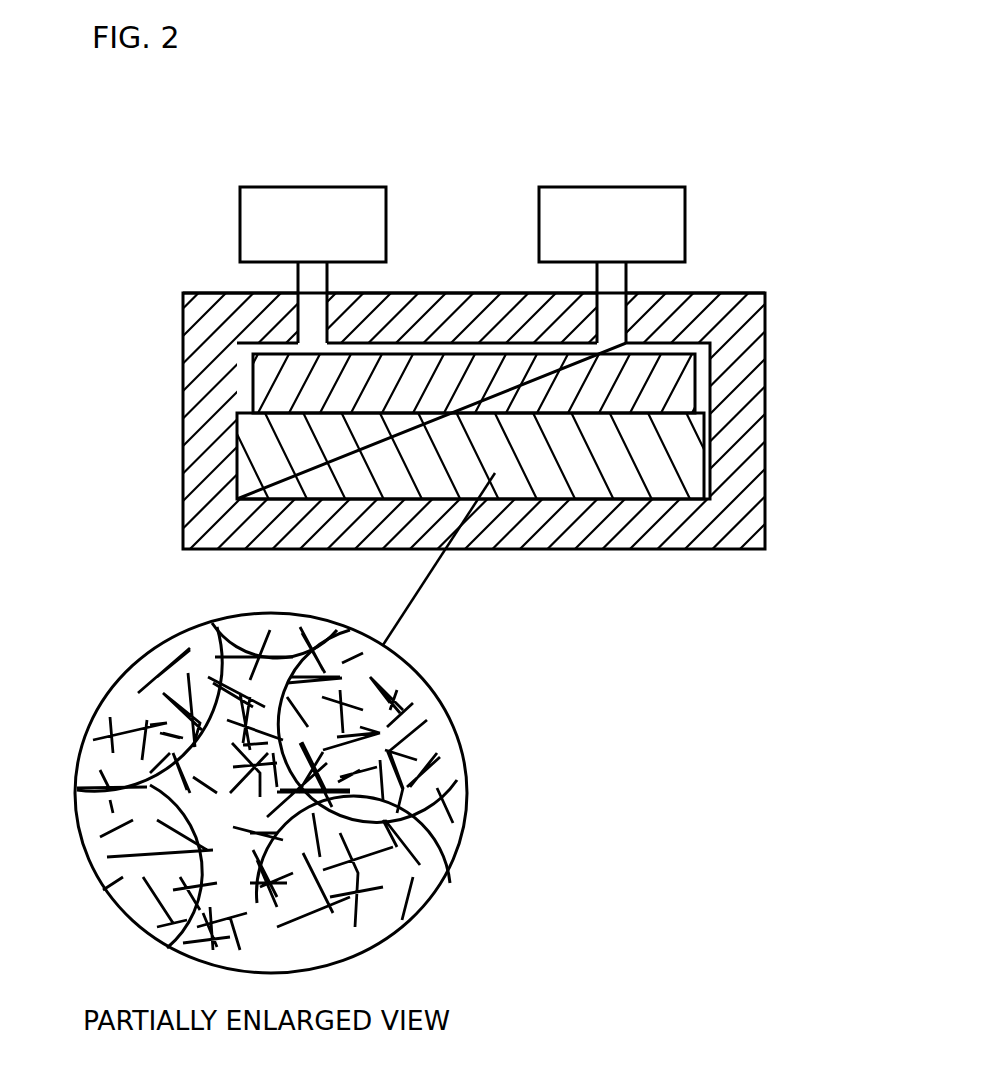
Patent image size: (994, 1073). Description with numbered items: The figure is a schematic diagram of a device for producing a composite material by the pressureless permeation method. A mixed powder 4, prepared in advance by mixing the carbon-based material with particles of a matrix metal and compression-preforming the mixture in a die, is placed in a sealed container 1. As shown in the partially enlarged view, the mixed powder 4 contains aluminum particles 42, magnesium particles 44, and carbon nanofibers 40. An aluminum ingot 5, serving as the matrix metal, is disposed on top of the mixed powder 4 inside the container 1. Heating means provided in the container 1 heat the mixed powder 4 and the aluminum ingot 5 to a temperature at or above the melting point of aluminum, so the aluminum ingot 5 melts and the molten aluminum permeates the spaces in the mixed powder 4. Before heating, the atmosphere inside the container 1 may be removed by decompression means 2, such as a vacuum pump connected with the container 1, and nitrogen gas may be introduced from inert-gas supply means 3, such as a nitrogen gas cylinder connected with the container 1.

The sealed container 1 is at (697, 301).
The decompression means 2 is at (302, 197).
The inert-gas supply means 3 is at (633, 194).
The mixed powder 4 is at (590, 452).
The aluminum ingot 5 is at (627, 382).
The carbon nanofibers 40 is at (413, 891).
The aluminum particles 42 is at (430, 963).
The magnesium particles 44 is at (287, 628).